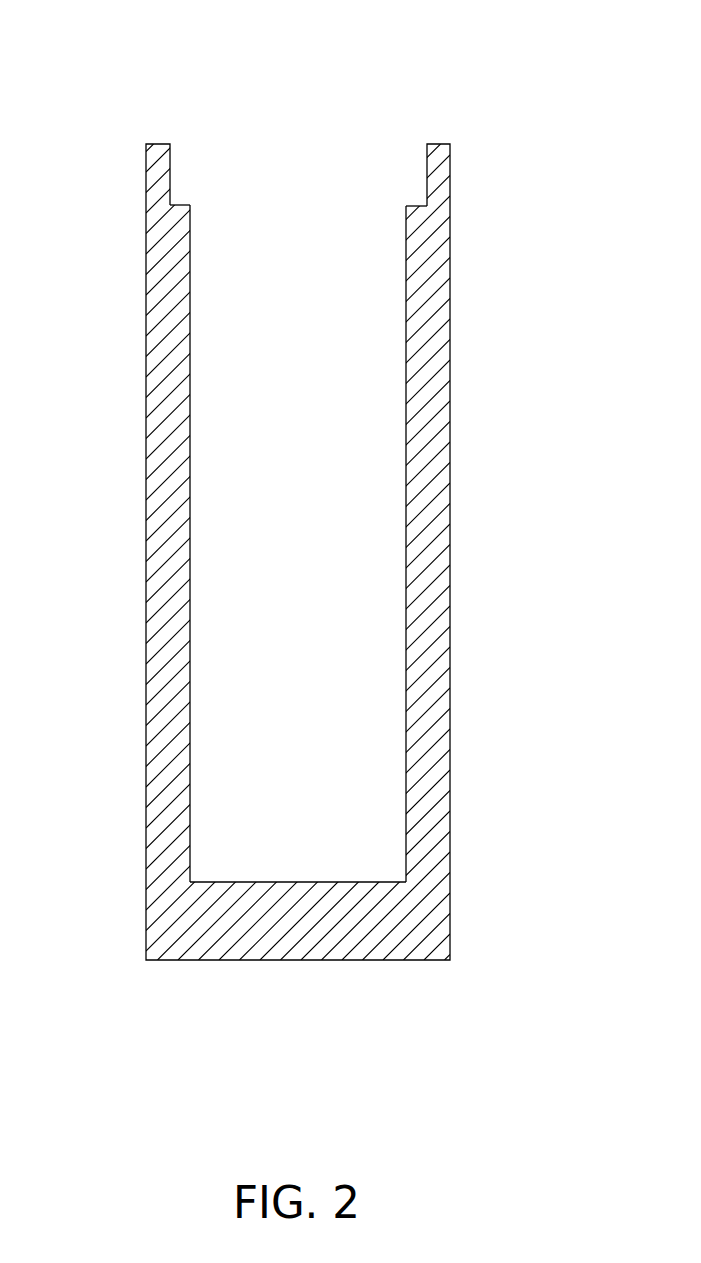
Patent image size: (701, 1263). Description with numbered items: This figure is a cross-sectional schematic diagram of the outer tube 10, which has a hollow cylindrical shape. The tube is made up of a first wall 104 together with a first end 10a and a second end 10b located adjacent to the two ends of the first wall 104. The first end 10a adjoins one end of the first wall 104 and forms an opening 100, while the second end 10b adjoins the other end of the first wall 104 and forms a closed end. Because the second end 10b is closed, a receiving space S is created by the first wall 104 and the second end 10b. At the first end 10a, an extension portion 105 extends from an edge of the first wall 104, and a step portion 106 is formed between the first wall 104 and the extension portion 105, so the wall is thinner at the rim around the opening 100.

The outer tube 10 is at (113, 72).
The opening 100 is at (427, 134).
The first end 10a is at (377, 179).
The extension portion 105 is at (452, 166).
The step portion 106 is at (413, 205).
The first wall 104 is at (442, 418).
The receiving space S is at (370, 485).
The second end 10b is at (422, 927).